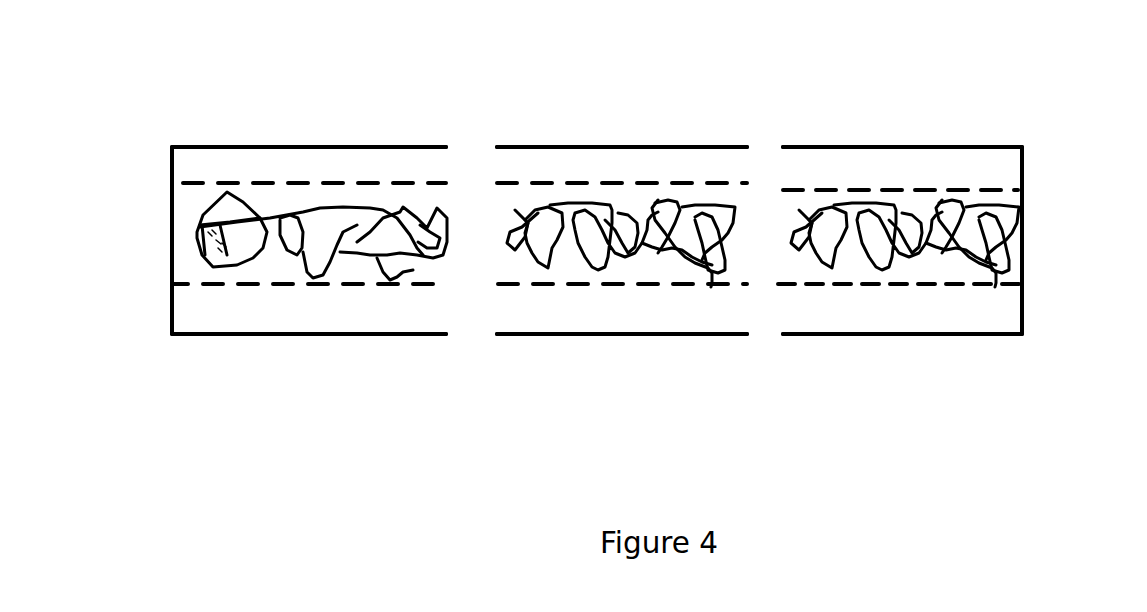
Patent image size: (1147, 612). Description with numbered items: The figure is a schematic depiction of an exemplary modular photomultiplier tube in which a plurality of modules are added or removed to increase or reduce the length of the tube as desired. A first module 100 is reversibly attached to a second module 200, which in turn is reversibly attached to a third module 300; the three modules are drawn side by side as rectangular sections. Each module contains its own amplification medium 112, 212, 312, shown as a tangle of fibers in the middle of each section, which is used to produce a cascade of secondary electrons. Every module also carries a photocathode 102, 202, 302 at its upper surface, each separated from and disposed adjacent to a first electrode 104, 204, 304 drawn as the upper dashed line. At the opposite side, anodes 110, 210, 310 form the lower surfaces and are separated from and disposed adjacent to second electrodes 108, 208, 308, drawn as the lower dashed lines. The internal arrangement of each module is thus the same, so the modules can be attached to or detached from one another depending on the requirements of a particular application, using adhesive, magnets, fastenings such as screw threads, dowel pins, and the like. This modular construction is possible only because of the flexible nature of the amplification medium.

The first module 100 is at (298, 107).
The photocathode 102 is at (193, 142).
The first electrode 104 is at (185, 182).
The second electrode 108 is at (288, 283).
The anode 110 is at (188, 333).
The amplification medium 112 is at (382, 200).
The second module 200 is at (612, 115).
The photocathode 202 is at (658, 143).
The first electrode 204 is at (683, 185).
The second electrode 208 is at (600, 282).
The anode 210 is at (628, 337).
The amplification medium 212 is at (710, 277).
The third module 300 is at (853, 128).
The photocathode 302 is at (937, 142).
The first electrode 304 is at (965, 188).
The second electrode 308 is at (872, 285).
The anode 310 is at (945, 337).
The amplification medium 312 is at (1018, 233).